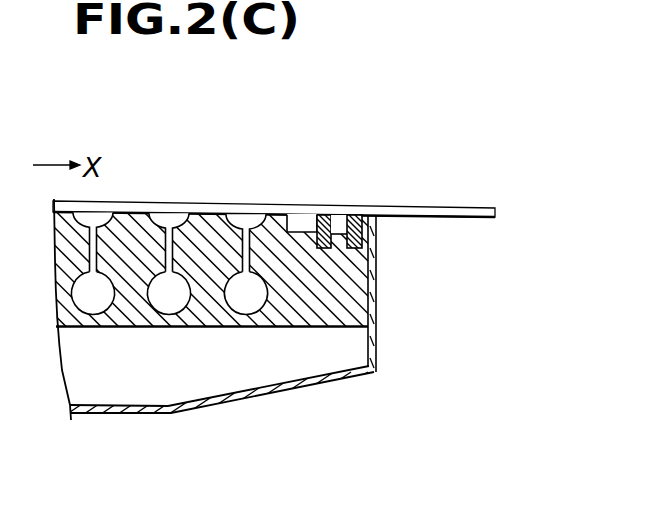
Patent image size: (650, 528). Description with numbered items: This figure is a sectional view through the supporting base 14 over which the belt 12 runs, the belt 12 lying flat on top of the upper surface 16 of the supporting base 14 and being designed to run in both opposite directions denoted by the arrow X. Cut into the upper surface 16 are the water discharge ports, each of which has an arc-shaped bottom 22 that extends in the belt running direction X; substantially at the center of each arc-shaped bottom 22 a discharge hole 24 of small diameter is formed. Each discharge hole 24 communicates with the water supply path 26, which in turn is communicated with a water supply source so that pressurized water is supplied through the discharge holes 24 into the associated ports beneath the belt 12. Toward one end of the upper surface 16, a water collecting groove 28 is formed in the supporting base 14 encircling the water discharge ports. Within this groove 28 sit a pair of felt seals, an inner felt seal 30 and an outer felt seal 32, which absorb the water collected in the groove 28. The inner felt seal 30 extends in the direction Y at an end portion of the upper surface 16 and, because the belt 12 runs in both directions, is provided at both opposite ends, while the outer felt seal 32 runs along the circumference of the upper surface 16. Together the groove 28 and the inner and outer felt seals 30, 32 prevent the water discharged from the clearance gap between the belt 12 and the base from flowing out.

The belt 12 is at (457, 208).
The supporting base 14 is at (350, 295).
The upper surface 16 is at (55, 216).
The arc-shaped bottom 22 is at (140, 216).
The discharge hole 24 is at (222, 226).
The water supply path 26 is at (251, 296).
The water collecting groove 28 is at (303, 222).
The inner felt seal 30 is at (323, 222).
The outer felt seal 32 is at (357, 222).